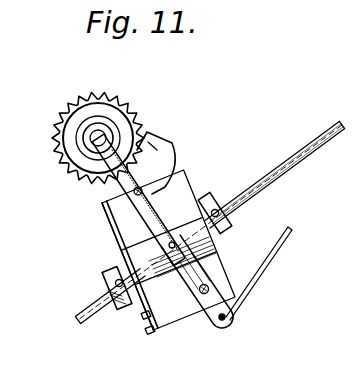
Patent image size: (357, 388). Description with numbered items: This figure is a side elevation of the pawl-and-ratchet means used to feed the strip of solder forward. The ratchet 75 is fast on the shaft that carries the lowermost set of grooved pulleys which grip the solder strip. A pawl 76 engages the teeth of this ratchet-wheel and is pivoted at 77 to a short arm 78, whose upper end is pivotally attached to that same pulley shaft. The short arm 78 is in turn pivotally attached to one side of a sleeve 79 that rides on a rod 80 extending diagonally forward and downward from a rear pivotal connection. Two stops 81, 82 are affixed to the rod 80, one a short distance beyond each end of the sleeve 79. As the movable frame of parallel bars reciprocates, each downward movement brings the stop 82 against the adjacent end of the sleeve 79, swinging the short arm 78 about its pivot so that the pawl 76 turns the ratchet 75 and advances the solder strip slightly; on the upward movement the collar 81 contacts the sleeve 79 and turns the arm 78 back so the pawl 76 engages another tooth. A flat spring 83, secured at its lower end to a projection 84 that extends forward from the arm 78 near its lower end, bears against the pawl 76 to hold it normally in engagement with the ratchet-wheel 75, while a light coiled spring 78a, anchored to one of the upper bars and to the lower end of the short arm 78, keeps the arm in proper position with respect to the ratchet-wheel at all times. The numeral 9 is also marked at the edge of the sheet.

The ratchet 75 is at (112, 94).
The pawl 76 is at (162, 163).
The pivot 77 is at (153, 194).
The short arm 78 is at (205, 264).
The light coiled spring 78a is at (268, 260).
The sleeve 79 is at (192, 198).
The rod 80 is at (314, 143).
The stop 81 is at (233, 220).
The stop 82 is at (125, 305).
The flat spring 83 is at (113, 238).
The projection 84 is at (173, 313).
The machine frame 9 is at (350, 256).